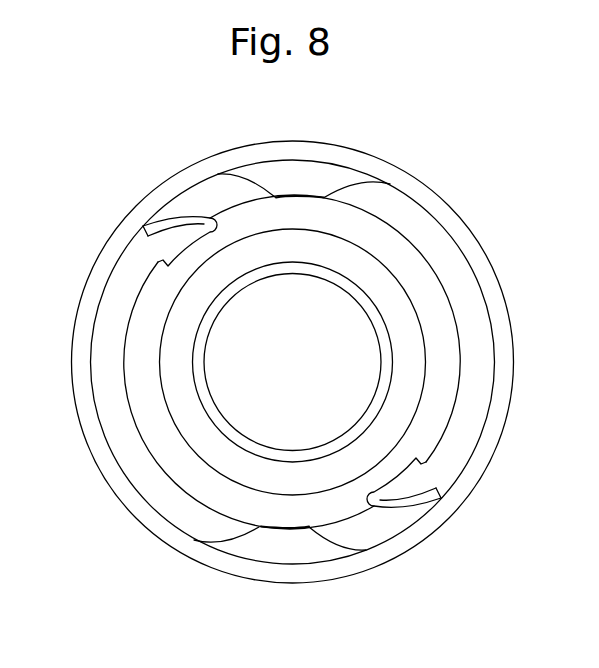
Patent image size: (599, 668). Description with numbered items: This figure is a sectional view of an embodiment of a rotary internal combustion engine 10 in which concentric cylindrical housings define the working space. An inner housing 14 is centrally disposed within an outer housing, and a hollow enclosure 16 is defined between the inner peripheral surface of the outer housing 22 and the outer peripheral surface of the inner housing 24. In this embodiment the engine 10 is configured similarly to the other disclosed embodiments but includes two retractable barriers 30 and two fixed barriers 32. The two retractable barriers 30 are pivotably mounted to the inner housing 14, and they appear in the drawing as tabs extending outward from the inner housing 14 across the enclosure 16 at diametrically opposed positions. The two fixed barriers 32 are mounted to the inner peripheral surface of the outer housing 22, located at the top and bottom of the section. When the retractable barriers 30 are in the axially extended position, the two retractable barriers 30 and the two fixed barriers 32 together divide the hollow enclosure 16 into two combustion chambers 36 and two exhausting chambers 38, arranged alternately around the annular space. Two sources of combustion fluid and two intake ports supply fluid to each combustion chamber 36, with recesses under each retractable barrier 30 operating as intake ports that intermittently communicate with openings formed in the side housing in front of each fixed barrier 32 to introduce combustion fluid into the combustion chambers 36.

The rotary internal combustion engine 10 is at (79, 547).
The inner housing 14 is at (430, 419).
The hollow enclosure 16 is at (450, 472).
The inner peripheral surface of the outer housing 22 is at (112, 489).
The outer peripheral surface of the inner housing 24 is at (447, 293).
The retractable barrier 30 is at (158, 220).
The fixed barrier 32 is at (306, 186).
The combustion chamber 36 is at (117, 322).
The exhausting chamber 38 is at (208, 195).